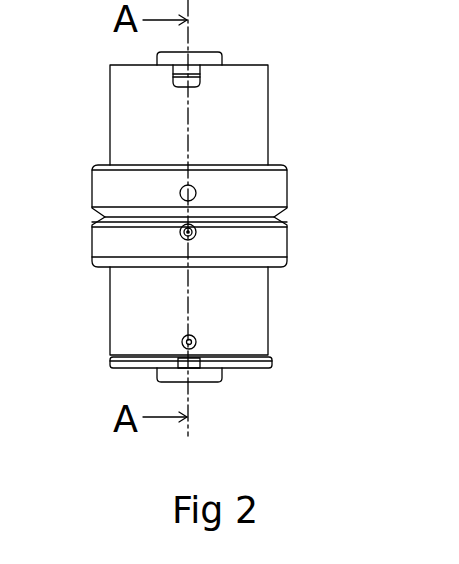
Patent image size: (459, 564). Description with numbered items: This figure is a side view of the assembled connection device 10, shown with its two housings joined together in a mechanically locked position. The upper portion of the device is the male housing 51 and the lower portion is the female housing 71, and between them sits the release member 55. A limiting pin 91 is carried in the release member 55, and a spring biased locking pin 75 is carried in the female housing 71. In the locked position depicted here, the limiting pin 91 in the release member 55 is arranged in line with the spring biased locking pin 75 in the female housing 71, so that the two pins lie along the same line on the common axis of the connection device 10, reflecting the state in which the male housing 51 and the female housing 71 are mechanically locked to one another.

The connection device 10 is at (86, 137).
The male housing 51 is at (240, 118).
The limiting pin 91 is at (195, 189).
The release member 55 is at (270, 193).
The spring biased locking pin 75 is at (193, 238).
The female housing 71 is at (138, 315).